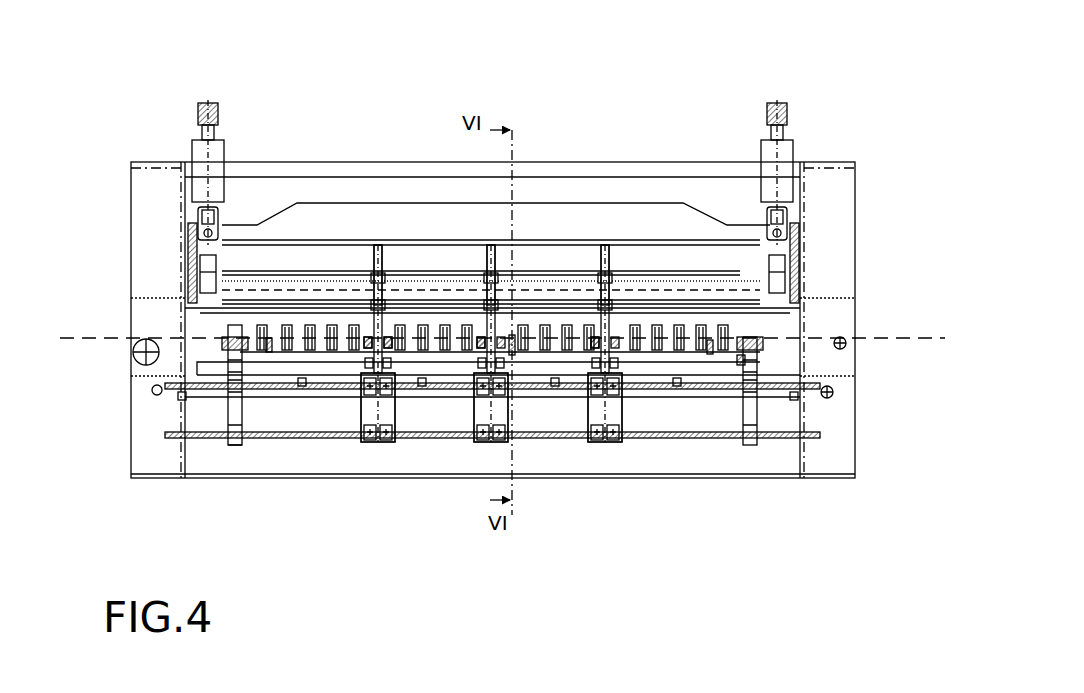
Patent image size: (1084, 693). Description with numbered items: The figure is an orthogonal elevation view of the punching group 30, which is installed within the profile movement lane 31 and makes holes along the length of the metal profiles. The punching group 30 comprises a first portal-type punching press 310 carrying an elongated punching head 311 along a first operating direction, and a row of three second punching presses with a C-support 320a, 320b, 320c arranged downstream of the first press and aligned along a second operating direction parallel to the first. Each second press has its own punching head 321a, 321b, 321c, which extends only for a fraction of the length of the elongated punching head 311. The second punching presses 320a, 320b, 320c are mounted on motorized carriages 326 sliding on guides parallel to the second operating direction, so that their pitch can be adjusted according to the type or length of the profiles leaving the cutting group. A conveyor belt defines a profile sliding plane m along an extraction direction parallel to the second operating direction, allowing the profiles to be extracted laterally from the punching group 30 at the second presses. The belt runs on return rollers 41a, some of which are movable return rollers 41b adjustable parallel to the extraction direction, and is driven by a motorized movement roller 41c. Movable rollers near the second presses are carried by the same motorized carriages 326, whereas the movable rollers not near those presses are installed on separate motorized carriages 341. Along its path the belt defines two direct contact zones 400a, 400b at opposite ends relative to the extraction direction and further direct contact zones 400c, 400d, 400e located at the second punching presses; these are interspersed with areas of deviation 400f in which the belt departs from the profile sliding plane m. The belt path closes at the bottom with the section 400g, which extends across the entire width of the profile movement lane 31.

The punching group 30 is at (860, 82).
The profile movement lane 31 is at (320, 404).
The return rollers 41a is at (156, 396).
The movable return rollers 41b is at (365, 340).
The motorized movement roller 41c is at (132, 355).
The first portal-type punching press 310 is at (664, 236).
The elongated punching head 311 is at (705, 262).
The second punching press with a C-support 320a is at (355, 444).
The second punching press with a C-support 320b is at (518, 418).
The second punching press with a C-support 320c is at (598, 458).
The punching head 321a is at (378, 295).
The punching head 321b is at (498, 295).
The punching head 321c is at (611, 295).
The motorized carriages 326 is at (372, 425).
The motorized carriages 341 is at (236, 446).
The direct contact zone 400a is at (166, 330).
The direct contact zone 400b is at (818, 328).
The direct contact zone 400c is at (366, 333).
The direct contact zone 400d is at (479, 333).
The direct contact zone 400e is at (596, 333).
The areas of deviation 400f is at (297, 376).
The bottom section 400g is at (164, 404).
The profile sliding plane m is at (497, 341).